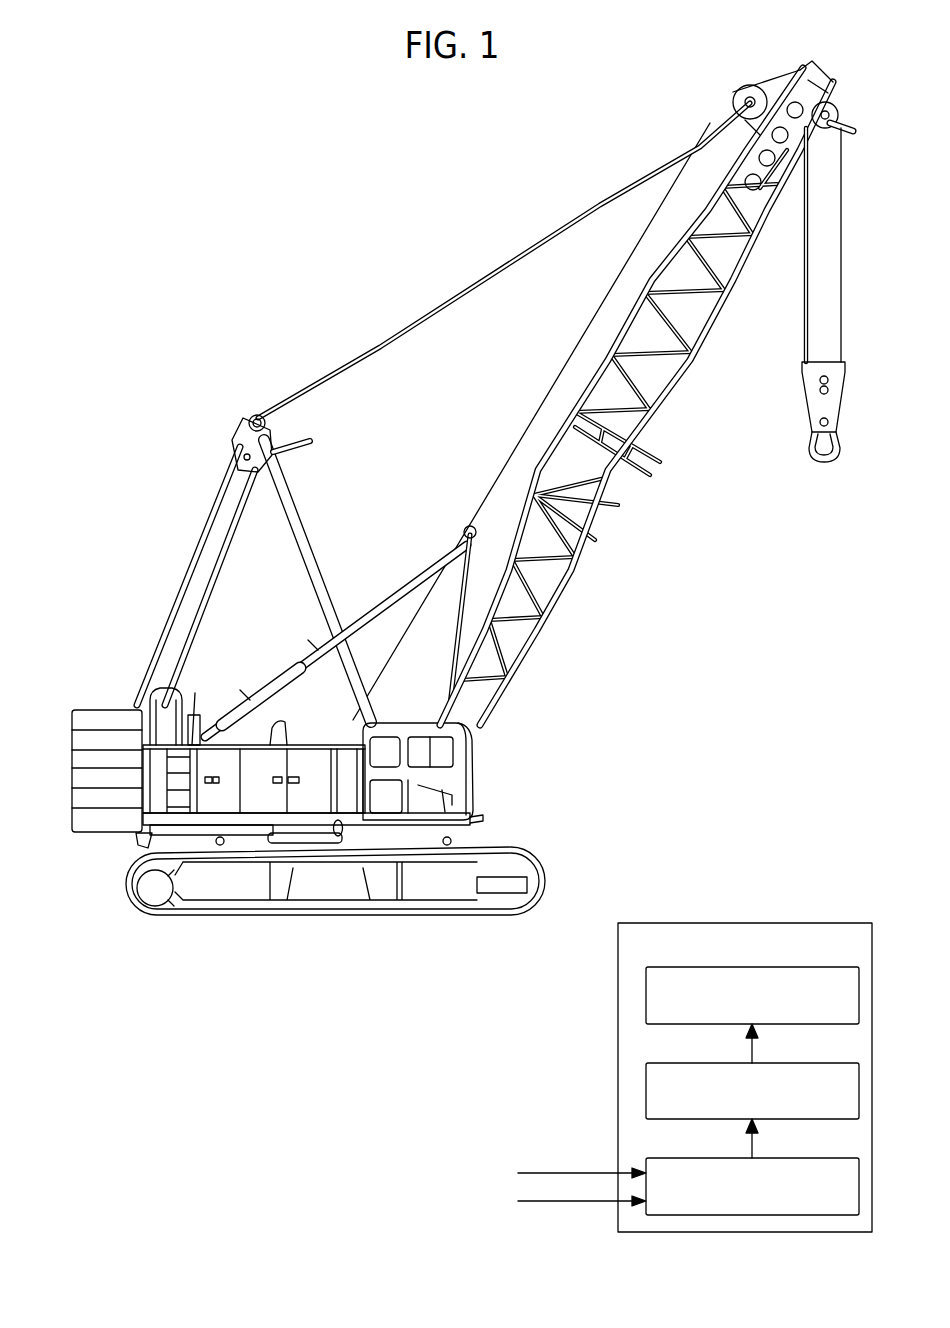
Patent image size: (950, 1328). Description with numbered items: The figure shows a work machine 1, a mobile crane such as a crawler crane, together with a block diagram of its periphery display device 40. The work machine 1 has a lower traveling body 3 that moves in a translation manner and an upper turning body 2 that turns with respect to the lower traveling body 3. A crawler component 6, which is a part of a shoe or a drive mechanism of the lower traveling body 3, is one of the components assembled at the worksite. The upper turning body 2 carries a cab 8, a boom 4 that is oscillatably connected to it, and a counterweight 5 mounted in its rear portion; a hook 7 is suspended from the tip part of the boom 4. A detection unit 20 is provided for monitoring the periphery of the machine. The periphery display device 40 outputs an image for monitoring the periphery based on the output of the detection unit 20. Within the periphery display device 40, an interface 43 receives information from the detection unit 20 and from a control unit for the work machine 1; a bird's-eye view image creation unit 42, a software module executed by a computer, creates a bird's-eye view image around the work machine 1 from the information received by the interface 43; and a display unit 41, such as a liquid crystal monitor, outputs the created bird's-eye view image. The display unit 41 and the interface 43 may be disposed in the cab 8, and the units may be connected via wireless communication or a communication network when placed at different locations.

The work machine 1 is at (70, 335).
The upper turning body 2 is at (548, 772).
The lower traveling body 3 is at (591, 861).
The boom 4 is at (606, 518).
The counterweight 5 is at (72, 720).
The crawler component 6 is at (124, 893).
The hook 7 is at (847, 393).
The cab 8 is at (441, 750).
The detection unit 20 is at (334, 840).
The periphery display device 40 is at (835, 924).
The display unit 41 is at (862, 1000).
The bird's-eye view image creation unit 42 is at (862, 1093).
The interface 43 is at (862, 1188).